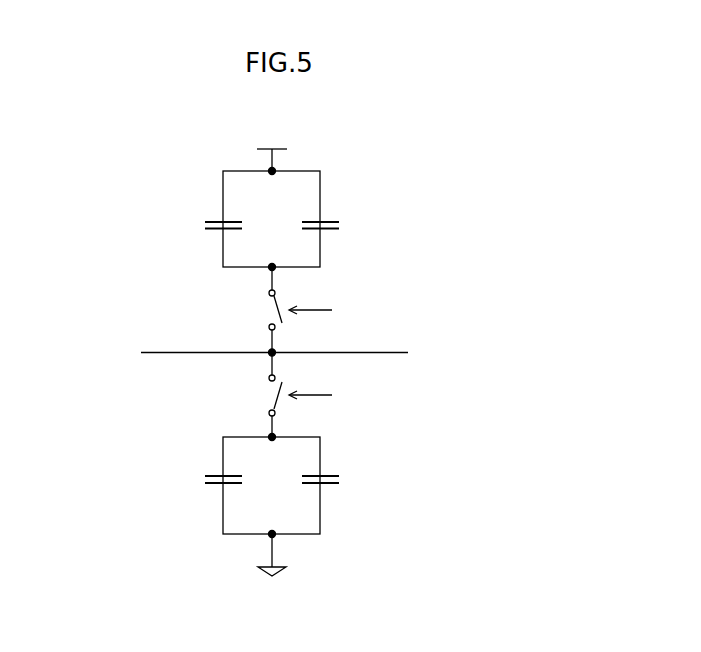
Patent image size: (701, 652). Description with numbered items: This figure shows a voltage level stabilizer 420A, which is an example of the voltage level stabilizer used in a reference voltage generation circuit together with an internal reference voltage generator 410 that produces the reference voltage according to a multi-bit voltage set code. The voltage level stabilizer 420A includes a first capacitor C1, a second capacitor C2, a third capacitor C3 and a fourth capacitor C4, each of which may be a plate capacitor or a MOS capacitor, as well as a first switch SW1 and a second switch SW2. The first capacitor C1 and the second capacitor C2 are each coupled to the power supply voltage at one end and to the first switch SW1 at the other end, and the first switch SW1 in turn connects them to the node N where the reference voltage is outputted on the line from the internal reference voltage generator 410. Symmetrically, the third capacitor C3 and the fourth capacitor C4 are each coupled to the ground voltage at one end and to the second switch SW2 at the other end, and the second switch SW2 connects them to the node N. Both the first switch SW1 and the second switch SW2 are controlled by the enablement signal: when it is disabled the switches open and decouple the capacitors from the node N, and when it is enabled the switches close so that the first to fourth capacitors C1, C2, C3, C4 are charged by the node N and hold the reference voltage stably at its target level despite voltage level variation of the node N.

The voltage level stabilizer 420A is at (146, 130).
The internal reference voltage generator 410 is at (254, 354).
The first capacitor C1 is at (230, 222).
The second capacitor C2 is at (326, 222).
The third capacitor C3 is at (233, 484).
The fourth capacitor C4 is at (330, 484).
The first switch SW1 is at (271, 312).
The second switch SW2 is at (271, 397).
The node N is at (282, 343).